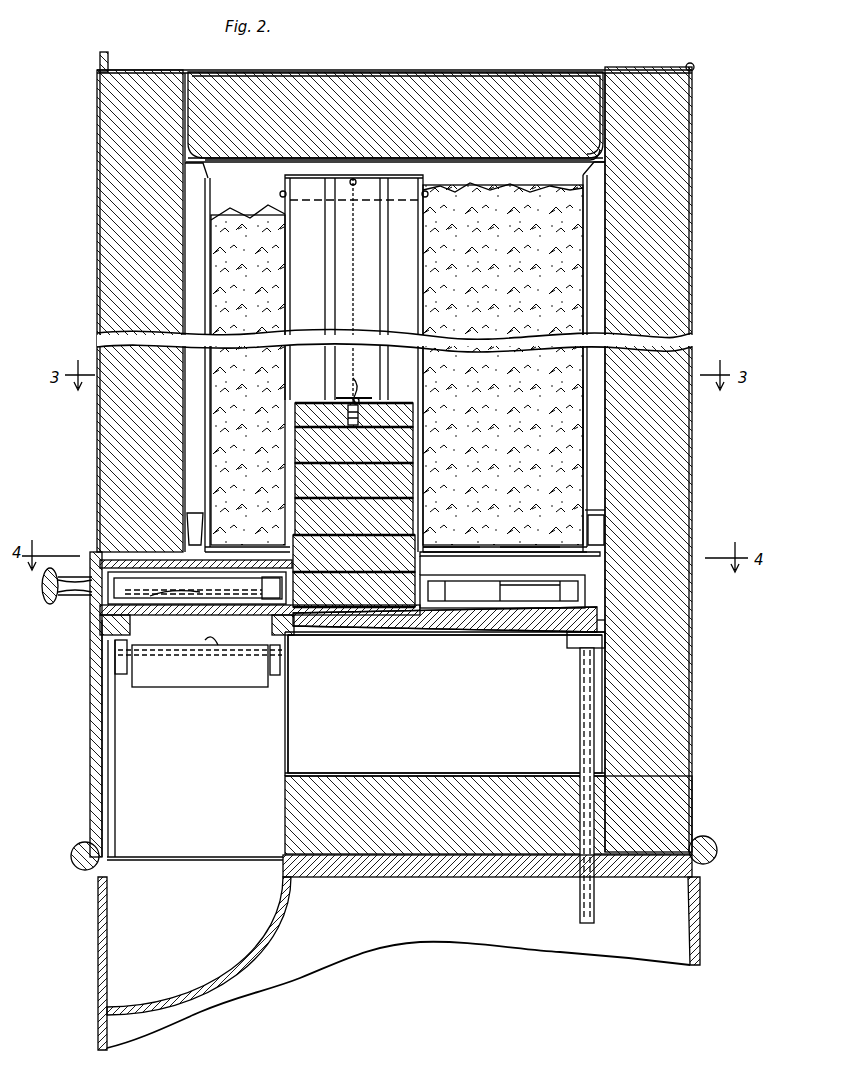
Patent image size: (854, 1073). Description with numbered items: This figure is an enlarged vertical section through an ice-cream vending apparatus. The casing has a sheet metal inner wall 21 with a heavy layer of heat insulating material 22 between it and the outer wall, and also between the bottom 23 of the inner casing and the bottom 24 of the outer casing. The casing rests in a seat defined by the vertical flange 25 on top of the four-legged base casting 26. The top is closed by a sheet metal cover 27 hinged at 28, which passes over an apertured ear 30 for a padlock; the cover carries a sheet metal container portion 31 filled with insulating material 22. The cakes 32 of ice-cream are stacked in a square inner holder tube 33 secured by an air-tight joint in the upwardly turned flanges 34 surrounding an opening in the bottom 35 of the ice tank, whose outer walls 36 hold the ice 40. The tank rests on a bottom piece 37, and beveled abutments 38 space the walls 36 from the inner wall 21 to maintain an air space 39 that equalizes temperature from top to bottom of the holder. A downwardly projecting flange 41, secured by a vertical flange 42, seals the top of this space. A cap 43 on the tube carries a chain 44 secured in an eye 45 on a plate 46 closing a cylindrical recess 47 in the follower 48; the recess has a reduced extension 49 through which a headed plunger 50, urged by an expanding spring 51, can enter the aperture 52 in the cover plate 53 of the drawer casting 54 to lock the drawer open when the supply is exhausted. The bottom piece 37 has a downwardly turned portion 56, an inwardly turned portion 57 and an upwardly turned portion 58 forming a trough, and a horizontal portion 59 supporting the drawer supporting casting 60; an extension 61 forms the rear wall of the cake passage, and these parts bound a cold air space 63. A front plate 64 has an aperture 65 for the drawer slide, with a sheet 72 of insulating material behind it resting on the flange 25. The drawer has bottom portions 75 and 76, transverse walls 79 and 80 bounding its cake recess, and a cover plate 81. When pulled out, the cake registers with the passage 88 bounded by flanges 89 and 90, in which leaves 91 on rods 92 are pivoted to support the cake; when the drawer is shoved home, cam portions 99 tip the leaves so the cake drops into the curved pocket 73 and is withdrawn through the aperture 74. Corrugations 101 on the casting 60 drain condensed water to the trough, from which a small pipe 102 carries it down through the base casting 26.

The inner wall 21 is at (603, 388).
The heat insulating material 22 is at (470, 72).
The bottom of inner casing 23 is at (498, 776).
The bottom of outer casing 24 is at (445, 877).
The vertical flange 25 is at (80, 846).
The base casting 26 is at (628, 948).
The cover 27 is at (395, 72).
The hinge 28 is at (691, 63).
The apertured ear 30 is at (104, 52).
The sheet metal container portion 31 is at (556, 158).
The cakes of ice-cream 32 is at (425, 463).
The inner holder tube 33 is at (424, 398).
The upwardly turned flanges 34 is at (434, 547).
The bottom of ice containing tank 35 is at (510, 547).
The outer walls of ice tank 36 is at (583, 464).
The bottom piece 37 is at (190, 525).
The abutments 38 is at (600, 514).
The air space 39 is at (598, 488).
The ice 40 is at (520, 163).
The sheet metal flange 41 is at (610, 172).
The vertical flange 42 is at (640, 192).
The cap 43 is at (428, 192).
The chain 44 is at (354, 262).
The eye 45 is at (356, 392).
The plate 46 is at (340, 396).
The cylindrical recess 47 is at (394, 402).
The follower 48 is at (414, 420).
The reduced extension 49 is at (355, 428).
The headed plunger 50 is at (347, 418).
The helically coiled expanding spring 51 is at (340, 404).
The aperture 52 is at (500, 570).
The cover plate 53 is at (478, 575).
The drawer casting 54 is at (480, 628).
The downwardly turned portion 56 is at (600, 628).
The inwardly turned portion 57 is at (575, 648).
The upwardly turned portion 58 is at (530, 632).
The horizontal portion 59 is at (410, 616).
The drawer supporting casting 60 is at (342, 635).
The extension 61 is at (288, 742).
The cold air space 63 is at (445, 704).
The front plate 64 is at (90, 770).
The aperture 65 is at (92, 630).
The sheet of insulating material 72 is at (112, 778).
The curved pocket 73 is at (238, 968).
The aperture 74 is at (98, 966).
The bottom portion 75 is at (232, 600).
The bottom portion 76 is at (536, 603).
The transverse wall 79 is at (270, 598).
The transverse wall 80 is at (446, 591).
The cover plate 81 is at (224, 573).
The passage 88 is at (208, 642).
The front flange 89 is at (124, 676).
The rear flange 90 is at (274, 676).
The leaves 91 is at (215, 686).
The rod 92 is at (240, 650).
The cam portions 99 is at (160, 600).
The corrugations 101 is at (540, 614).
The pipe 102 is at (580, 748).